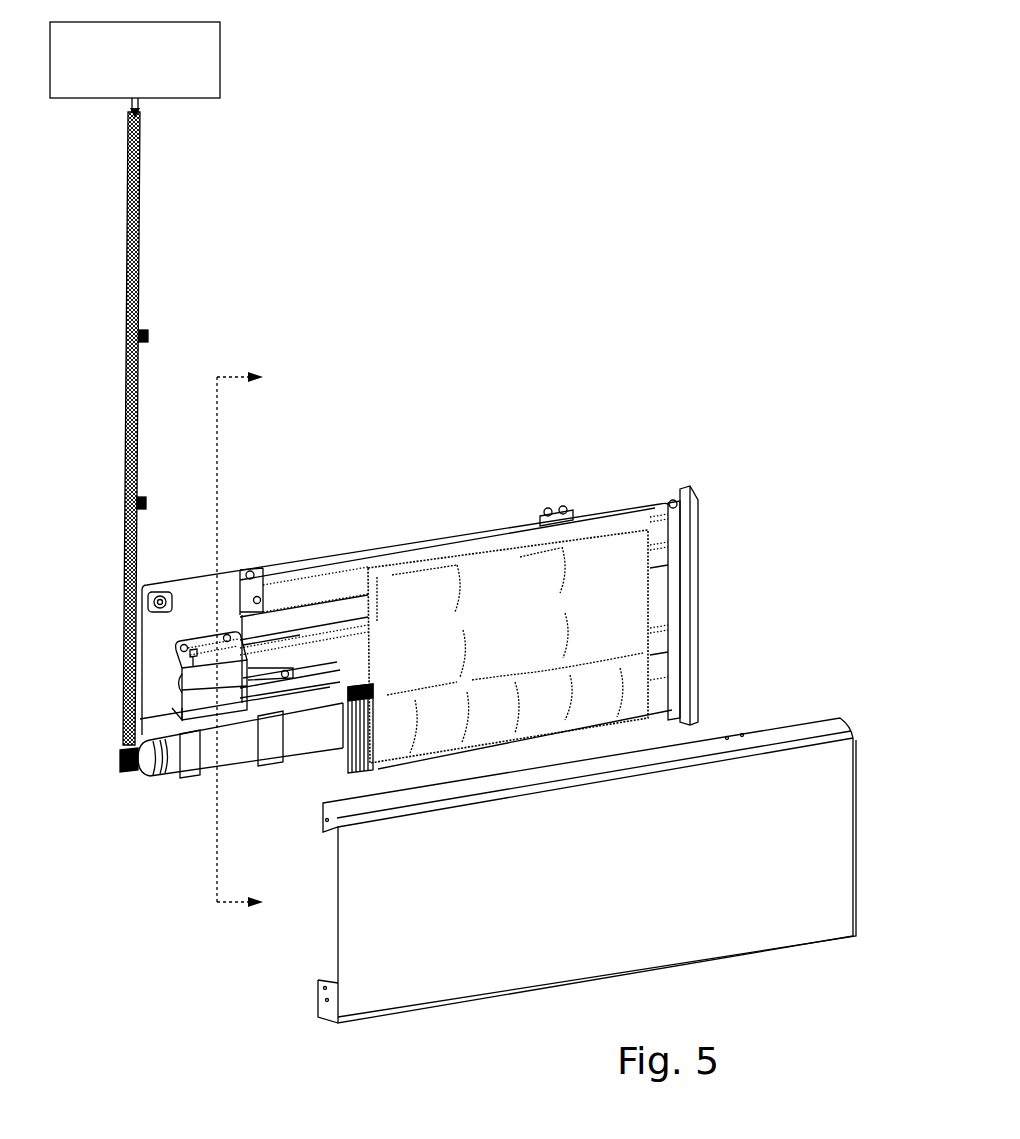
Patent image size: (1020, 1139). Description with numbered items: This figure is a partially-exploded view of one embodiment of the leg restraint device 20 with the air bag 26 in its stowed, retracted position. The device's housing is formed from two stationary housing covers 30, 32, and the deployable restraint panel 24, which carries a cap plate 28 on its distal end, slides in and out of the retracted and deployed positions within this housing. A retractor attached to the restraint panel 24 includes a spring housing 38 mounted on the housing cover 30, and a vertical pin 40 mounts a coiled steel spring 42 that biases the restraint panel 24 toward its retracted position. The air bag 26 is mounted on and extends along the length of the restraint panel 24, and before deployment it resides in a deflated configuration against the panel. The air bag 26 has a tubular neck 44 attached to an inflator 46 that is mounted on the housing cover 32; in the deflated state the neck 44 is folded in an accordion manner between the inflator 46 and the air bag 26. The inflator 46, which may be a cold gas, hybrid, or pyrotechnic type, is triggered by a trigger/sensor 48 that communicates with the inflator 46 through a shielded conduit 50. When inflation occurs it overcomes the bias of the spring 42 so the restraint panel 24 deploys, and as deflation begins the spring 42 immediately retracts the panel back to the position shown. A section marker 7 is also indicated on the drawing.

The section line 7- 7 is at (249, 640).
The leg restraint device 20 is at (559, 370).
The restraint panel 24 is at (343, 657).
The air bag 26 is at (345, 587).
The cap plate 28 is at (700, 545).
The housing cover 30 is at (228, 587).
The housing cover 32 is at (418, 978).
The spring housing 38 is at (200, 700).
The vertical pin 40 is at (178, 665).
The coiled steel spring 42 is at (268, 668).
The tubular neck 44 is at (345, 762).
The inflator 46 is at (172, 770).
The trigger/sensor 48 is at (222, 50).
The shielded conduit 50 is at (128, 440).